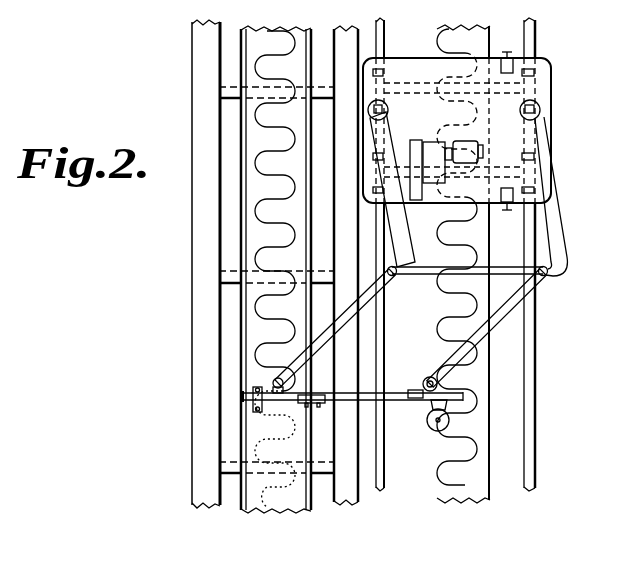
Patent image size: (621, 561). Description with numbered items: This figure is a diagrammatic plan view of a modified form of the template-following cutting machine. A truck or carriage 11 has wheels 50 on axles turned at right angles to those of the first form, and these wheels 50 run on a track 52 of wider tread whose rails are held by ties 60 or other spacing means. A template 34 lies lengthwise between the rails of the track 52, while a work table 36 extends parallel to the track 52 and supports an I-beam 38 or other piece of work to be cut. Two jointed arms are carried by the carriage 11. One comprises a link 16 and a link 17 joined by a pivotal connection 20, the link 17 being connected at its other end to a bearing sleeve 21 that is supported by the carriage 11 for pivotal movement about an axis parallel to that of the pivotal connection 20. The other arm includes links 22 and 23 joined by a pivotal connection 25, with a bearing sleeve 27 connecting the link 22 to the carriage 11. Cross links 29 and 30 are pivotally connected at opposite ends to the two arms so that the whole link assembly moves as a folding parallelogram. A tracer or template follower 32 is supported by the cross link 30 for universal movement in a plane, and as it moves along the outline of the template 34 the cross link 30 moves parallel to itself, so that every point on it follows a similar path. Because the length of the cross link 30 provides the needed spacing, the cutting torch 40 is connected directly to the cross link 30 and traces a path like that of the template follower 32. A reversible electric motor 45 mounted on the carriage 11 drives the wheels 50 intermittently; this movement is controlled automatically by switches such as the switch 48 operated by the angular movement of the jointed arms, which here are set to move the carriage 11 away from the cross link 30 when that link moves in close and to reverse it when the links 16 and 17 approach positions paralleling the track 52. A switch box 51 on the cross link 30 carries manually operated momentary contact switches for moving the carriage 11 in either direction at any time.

The carriage 11 is at (557, 81).
The link 16 is at (560, 224).
The link 17 is at (505, 312).
The pivotal connection 20 is at (548, 277).
The bearing sleeve 21 is at (541, 112).
The link 22 is at (406, 243).
The link 23 is at (370, 311).
The pivotal connection 25 is at (395, 276).
The bearing sleeve 27 is at (368, 111).
The cross link 29 is at (502, 267).
The cross link 30 is at (370, 401).
The template follower 32 is at (436, 432).
The template 34 is at (486, 486).
The work table 36 is at (186, 330).
The I-beam 38 is at (297, 500).
The cutting torch 40 is at (254, 412).
The reversible electric motor 45 is at (489, 124).
The switch 48 is at (418, 378).
The wheels 50 is at (384, 72).
The switch box 51 is at (324, 414).
The track 52 is at (386, 476).
The ties 60 is at (230, 90).